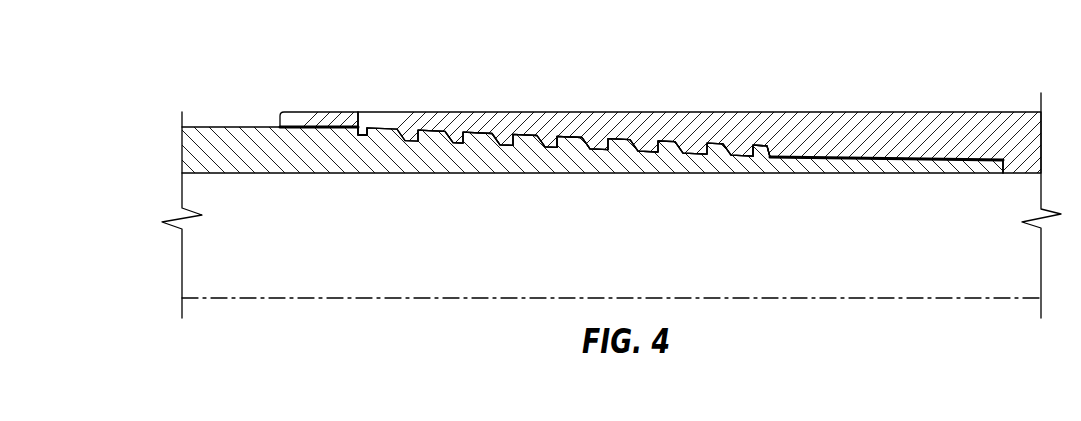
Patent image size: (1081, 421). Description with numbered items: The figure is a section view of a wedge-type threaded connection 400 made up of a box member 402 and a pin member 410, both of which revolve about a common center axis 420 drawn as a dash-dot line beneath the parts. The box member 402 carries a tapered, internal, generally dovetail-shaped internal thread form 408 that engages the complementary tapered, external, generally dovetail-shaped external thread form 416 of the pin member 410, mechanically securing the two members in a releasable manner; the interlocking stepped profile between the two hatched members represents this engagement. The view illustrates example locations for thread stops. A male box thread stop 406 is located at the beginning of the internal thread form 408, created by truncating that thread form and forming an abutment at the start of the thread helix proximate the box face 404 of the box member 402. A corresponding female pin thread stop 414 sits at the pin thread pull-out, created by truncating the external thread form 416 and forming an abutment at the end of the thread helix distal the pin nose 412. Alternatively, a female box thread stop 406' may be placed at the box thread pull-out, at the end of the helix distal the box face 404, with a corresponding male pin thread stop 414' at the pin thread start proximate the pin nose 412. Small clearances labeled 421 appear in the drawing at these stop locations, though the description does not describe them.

The threaded connection 400 is at (886, 64).
The box member 402 is at (997, 147).
The box face 404 is at (279, 123).
The male box thread stop 406 is at (328, 106).
The female box thread stop 406' is at (798, 116).
The internal thread form 408 is at (551, 134).
The pin member 410 is at (246, 158).
The pin nose 412 is at (1000, 171).
The female pin thread stop 414 is at (322, 168).
The male pin thread stop 414' is at (883, 181).
The external thread form 416 is at (573, 154).
The center axis 420 is at (408, 297).
The gap 421 is at (361, 132).